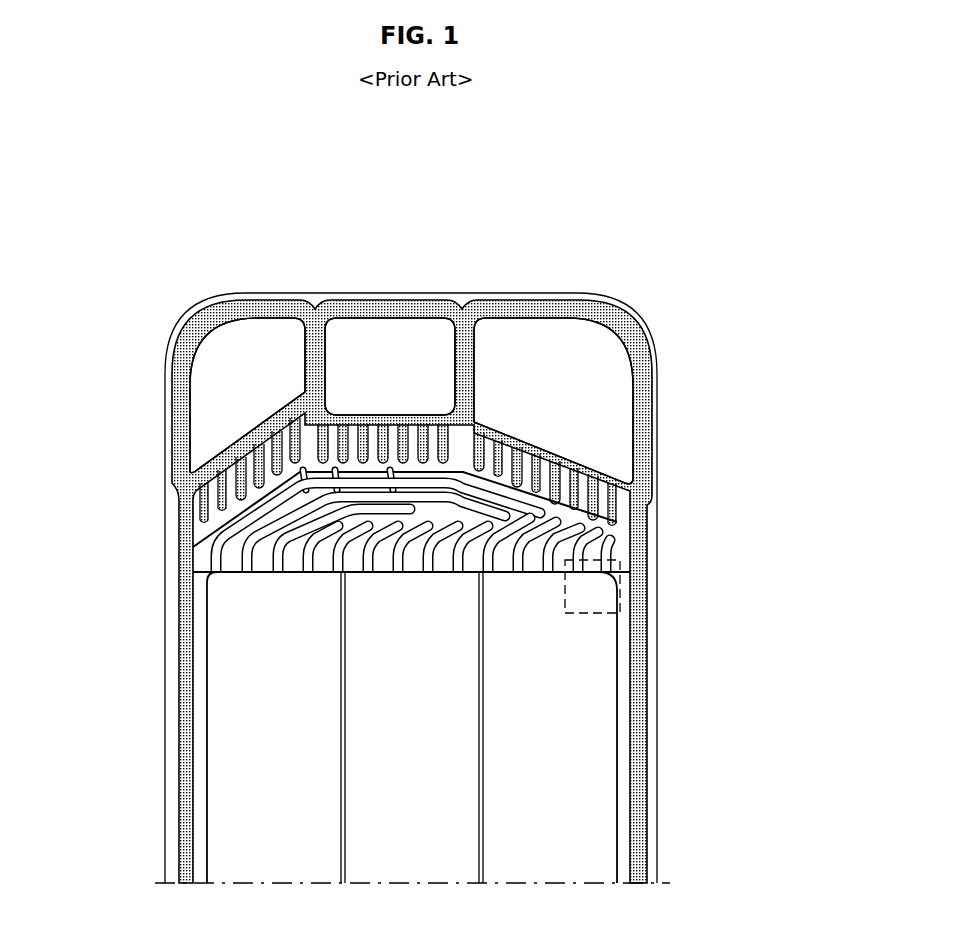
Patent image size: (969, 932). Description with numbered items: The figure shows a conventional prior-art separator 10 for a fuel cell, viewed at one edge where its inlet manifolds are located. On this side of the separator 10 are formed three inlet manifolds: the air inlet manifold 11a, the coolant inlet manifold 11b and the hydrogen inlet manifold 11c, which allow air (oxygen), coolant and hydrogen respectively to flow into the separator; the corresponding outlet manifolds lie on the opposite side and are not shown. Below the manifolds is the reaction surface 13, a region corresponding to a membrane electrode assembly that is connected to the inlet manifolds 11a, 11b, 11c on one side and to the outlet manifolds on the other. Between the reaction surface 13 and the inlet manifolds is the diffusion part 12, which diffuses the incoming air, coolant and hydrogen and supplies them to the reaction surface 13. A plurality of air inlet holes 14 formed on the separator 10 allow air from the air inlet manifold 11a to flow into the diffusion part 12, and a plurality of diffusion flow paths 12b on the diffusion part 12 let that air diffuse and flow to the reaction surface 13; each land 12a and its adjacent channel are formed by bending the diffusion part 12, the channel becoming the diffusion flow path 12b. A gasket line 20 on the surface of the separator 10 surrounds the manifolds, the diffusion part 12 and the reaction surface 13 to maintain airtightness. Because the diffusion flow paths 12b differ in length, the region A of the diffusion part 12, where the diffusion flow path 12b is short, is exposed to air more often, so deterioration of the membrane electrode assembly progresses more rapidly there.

The separator 10 is at (484, 296).
The air inlet manifold 11a is at (573, 358).
The coolant inlet manifold 11b is at (398, 346).
The hydrogen inlet manifold 11c is at (238, 364).
The diffusion part 12 is at (340, 589).
The land 12a is at (205, 568).
The diffusion flow path 12b is at (235, 573).
The reaction surface 13 is at (585, 755).
The air inlet holes 14 is at (640, 505).
The gasket line 20 is at (642, 355).
The region A is at (595, 615).